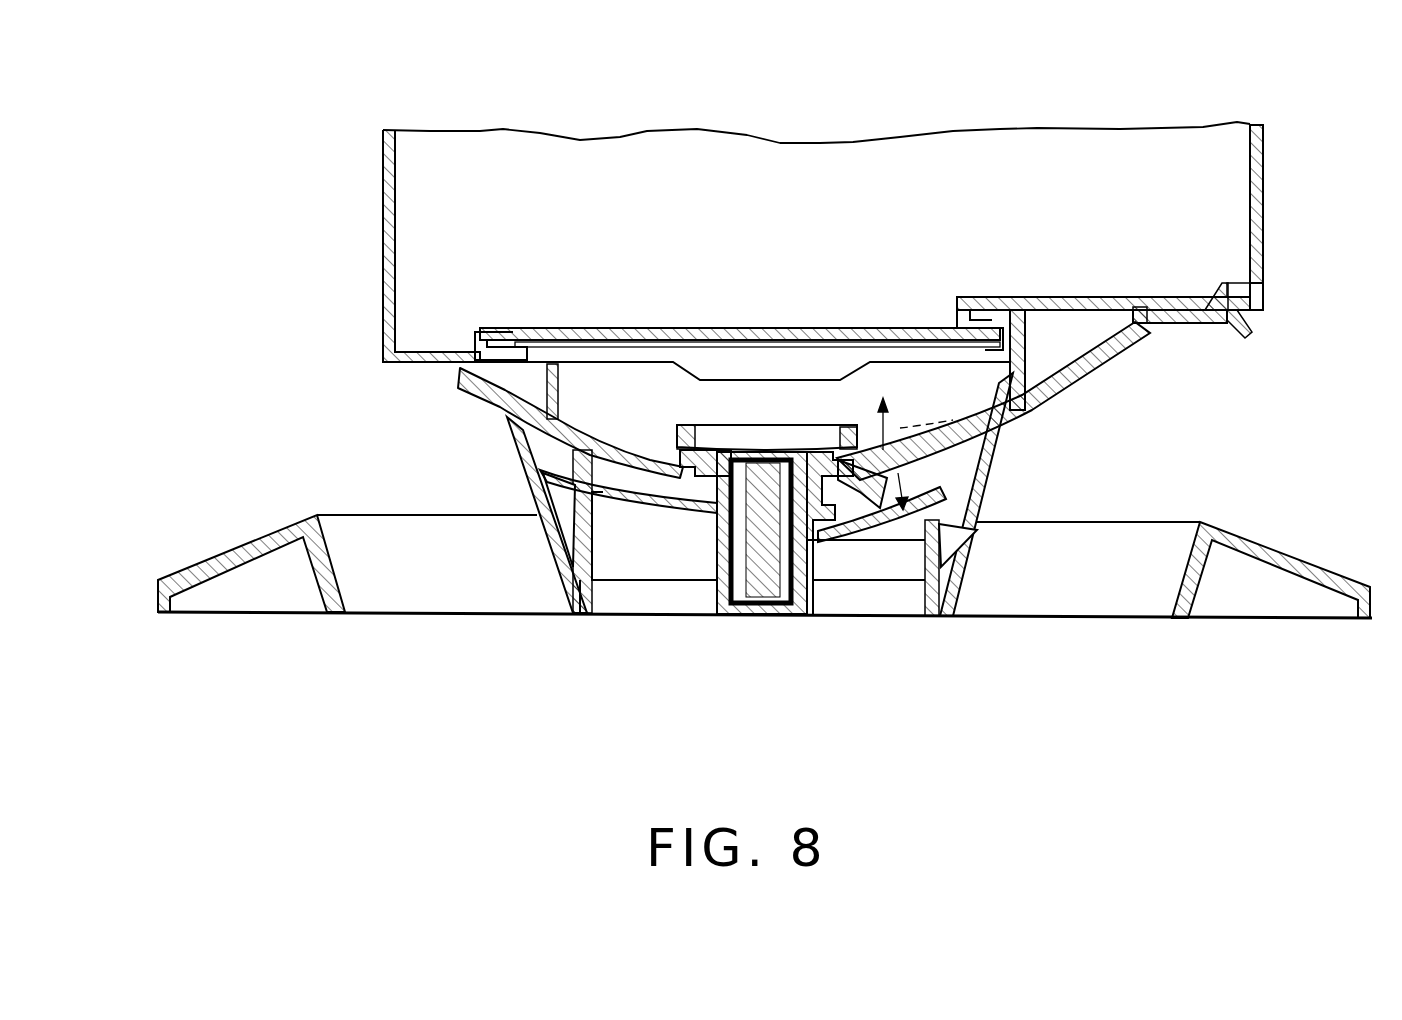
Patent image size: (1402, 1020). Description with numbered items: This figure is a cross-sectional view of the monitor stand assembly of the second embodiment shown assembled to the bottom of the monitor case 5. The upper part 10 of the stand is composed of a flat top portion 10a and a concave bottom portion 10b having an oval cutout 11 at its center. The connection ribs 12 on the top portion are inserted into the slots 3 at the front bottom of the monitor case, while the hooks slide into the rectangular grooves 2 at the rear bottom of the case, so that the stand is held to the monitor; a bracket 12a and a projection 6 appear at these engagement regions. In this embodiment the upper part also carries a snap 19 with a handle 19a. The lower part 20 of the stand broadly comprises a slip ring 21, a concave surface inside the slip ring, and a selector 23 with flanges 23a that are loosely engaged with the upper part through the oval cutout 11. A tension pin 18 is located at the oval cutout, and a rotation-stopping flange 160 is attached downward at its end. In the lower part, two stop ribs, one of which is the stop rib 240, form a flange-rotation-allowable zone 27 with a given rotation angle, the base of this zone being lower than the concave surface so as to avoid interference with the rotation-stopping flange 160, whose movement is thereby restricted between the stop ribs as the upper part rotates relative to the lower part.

The rectangular grooves 2 is at (958, 320).
The slots 3 is at (515, 332).
The housing 5 is at (1257, 205).
The wedge projection 6 is at (1207, 300).
The upper part 10 is at (1130, 370).
The flat top portion 10a is at (755, 328).
The concave bottom portion 10b is at (626, 545).
The oval cutout 11 is at (702, 368).
The connection ribs 12 is at (482, 340).
The clip 12a is at (972, 315).
The tension pin 18 is at (985, 565).
The snap 19 is at (1257, 265).
The handle 19a is at (1250, 338).
The lower part 20 is at (232, 548).
The slip ring 21 is at (505, 415).
The selector 23 is at (700, 590).
The flanges 23a is at (672, 430).
The flange-rotation-allowable zone 27 is at (838, 575).
The rotation-stopping flange 160 is at (878, 590).
The stop rib 240 is at (945, 470).